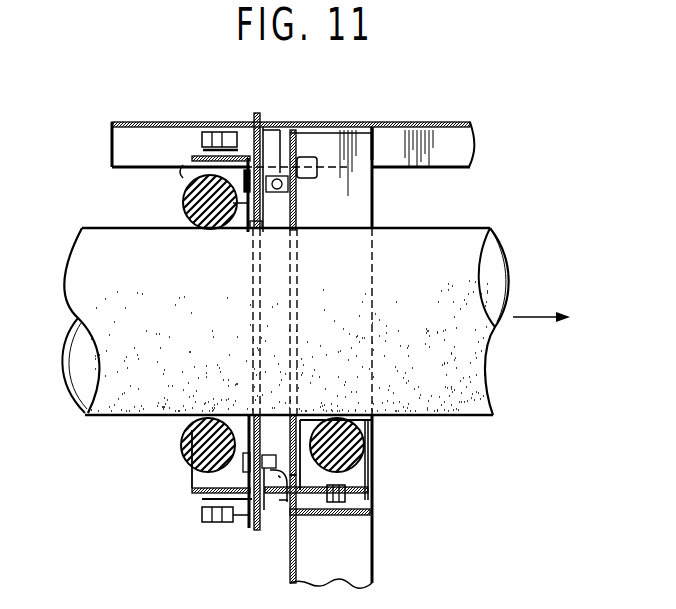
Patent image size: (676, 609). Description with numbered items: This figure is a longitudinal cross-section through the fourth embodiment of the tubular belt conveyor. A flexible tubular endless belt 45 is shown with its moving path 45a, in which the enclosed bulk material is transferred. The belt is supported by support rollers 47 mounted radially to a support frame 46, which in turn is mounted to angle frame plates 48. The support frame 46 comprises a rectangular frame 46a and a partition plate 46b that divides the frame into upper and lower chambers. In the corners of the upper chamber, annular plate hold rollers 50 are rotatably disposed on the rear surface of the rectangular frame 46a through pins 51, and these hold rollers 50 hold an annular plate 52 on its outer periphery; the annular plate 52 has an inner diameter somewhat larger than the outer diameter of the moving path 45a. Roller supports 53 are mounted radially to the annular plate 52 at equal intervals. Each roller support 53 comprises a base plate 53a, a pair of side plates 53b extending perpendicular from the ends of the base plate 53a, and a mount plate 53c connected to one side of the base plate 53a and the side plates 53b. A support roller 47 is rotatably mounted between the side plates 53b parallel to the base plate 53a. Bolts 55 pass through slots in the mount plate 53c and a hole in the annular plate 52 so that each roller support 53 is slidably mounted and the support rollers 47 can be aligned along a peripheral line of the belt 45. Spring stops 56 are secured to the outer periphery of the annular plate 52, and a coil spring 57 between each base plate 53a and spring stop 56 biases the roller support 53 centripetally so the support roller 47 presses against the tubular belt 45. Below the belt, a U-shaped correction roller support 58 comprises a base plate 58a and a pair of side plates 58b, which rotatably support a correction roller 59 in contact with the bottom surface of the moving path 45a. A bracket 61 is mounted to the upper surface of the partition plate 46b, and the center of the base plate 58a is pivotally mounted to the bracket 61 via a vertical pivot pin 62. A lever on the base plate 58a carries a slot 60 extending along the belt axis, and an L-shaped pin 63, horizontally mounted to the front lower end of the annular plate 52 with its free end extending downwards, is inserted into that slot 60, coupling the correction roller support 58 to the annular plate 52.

The flexible tubular endless belt 45 is at (498, 231).
The moving path 45a is at (500, 366).
The support frame 46 is at (425, 206).
The rectangular frame 46a is at (375, 150).
The partition plate 46b is at (356, 518).
The support roller 47 is at (210, 228).
The angle frame plate 48 is at (473, 142).
The annular plate hold roller 50 is at (281, 160).
The pin 51 is at (294, 152).
The annular plate 52 is at (256, 118).
The roller support 53 is at (183, 172).
The base plate 53a is at (192, 155).
The side plate 53b is at (244, 222).
The mount plate 53c is at (261, 231).
The bolt 55 is at (289, 186).
The spring stop 56 is at (218, 140).
The coil spring 57 is at (235, 150).
The correction roller support 58 is at (364, 441).
The base plate 58a is at (369, 488).
The side plate 58b is at (365, 469).
The lower roller 59 is at (338, 415).
The slot 60 is at (266, 506).
The bracket 61 is at (368, 511).
The vertical pivot pin 62 is at (333, 503).
The L-shaped pin 63 is at (283, 506).